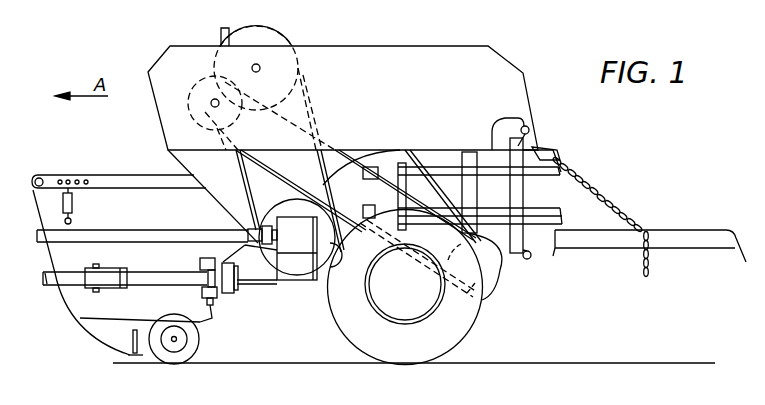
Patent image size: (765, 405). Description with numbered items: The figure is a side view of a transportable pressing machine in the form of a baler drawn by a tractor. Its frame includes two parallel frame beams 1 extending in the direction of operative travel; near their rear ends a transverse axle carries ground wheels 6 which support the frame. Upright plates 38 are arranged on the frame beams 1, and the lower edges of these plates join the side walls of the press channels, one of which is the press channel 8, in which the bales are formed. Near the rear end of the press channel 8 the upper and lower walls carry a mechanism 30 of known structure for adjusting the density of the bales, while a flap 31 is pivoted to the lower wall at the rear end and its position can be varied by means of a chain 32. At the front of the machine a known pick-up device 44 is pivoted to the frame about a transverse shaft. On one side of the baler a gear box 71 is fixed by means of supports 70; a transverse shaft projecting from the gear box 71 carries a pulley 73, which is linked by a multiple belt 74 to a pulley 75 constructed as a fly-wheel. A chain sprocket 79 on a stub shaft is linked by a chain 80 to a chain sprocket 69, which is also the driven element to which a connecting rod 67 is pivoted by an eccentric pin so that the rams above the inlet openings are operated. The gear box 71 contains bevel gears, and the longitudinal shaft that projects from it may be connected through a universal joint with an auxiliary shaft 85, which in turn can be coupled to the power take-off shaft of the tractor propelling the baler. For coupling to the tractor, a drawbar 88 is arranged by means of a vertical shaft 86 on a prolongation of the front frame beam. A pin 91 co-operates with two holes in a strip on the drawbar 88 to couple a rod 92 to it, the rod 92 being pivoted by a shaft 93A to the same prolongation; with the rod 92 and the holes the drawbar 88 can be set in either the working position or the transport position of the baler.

The frame beam 1 is at (253, 283).
The ground wheel 6 is at (453, 345).
The press channel 8 is at (553, 200).
The mechanism 30 is at (532, 132).
The flap 31 is at (693, 246).
The chain 32 is at (602, 200).
The upright plate 38 is at (414, 52).
The pick-up device 44 is at (90, 310).
The connecting rod 67 is at (423, 150).
The chain sprocket 69 is at (487, 289).
The support 70 is at (280, 280).
The gear box 71 is at (331, 255).
The pulley 73 is at (284, 204).
The multiple belt 74 is at (240, 175).
The pulley 75 is at (297, 63).
The chain sprocket 79 is at (192, 90).
The chain 80 is at (283, 170).
The auxiliary shaft 85 is at (137, 230).
The vertical shaft 86 is at (202, 258).
The drawbar 88 is at (45, 285).
The pin 91 is at (100, 260).
The rod 92 is at (150, 285).
The shaft 93A is at (227, 300).